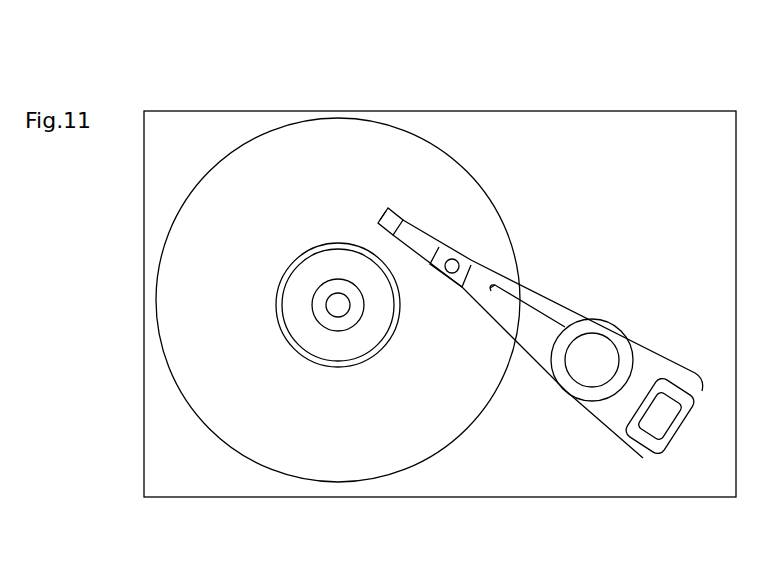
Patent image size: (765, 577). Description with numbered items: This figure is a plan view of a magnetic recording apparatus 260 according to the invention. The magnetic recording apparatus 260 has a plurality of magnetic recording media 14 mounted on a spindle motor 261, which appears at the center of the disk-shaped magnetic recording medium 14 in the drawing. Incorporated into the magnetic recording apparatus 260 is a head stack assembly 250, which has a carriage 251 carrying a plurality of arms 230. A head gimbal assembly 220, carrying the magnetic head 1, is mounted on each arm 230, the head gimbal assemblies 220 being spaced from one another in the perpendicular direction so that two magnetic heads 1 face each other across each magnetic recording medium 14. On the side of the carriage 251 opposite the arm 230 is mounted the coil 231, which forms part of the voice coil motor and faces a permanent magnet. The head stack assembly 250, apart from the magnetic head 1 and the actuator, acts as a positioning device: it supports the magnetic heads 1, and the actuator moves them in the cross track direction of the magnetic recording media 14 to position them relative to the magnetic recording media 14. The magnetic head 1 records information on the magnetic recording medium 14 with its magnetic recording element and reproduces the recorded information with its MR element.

The magnetic head 1 is at (401, 206).
The magnetic recording medium 14 is at (271, 474).
The head gimbal assembly 220 is at (428, 260).
The arm 230 is at (512, 342).
The coil 231 is at (688, 427).
The head stack assembly 250 is at (594, 420).
The carriage 251 is at (600, 318).
The magnetic recording apparatus 260 is at (474, 85).
The spindle motor 261 is at (338, 316).